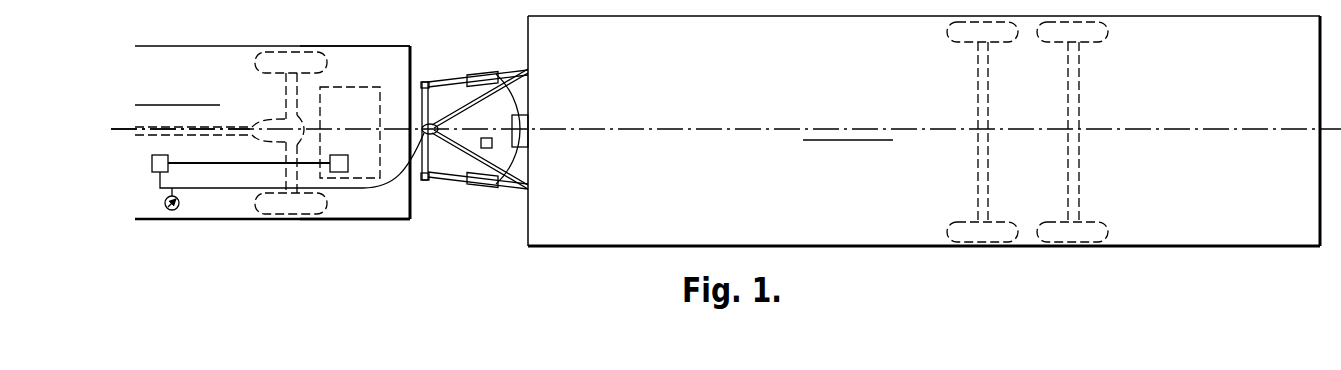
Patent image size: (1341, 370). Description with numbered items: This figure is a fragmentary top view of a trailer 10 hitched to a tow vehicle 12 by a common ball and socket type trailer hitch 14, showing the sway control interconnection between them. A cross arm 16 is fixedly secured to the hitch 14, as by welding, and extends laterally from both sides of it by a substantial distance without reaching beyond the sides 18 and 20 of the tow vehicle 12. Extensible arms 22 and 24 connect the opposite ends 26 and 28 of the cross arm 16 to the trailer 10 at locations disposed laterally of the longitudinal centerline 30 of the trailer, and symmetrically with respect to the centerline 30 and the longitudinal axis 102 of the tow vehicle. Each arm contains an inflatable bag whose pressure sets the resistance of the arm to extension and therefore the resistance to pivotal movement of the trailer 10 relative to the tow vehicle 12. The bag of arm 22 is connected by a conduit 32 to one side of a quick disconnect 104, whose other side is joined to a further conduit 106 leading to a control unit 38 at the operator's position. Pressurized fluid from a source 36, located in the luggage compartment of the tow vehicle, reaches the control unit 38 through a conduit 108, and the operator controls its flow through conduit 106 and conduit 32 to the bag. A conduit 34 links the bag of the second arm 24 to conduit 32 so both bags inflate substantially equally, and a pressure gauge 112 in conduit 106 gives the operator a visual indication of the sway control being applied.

The trailer 10 is at (845, 250).
The tow vehicle 12 is at (306, 226).
The trailer hitch 14 is at (431, 123).
The cross arm 16 is at (421, 106).
The side of the tow vehicle 18 is at (372, 221).
The side of the tow vehicle 20 is at (371, 46).
The extensible arm 22 is at (473, 187).
The extensible arm 24 is at (473, 75).
The end of the cross arm 26 is at (425, 180).
The end of the cross arm 28 is at (425, 82).
The longitudinal centerline of the trailer 30 is at (695, 130).
The conduit 32 is at (514, 155).
The conduit 34 is at (514, 104).
The source of pressurized fluid 36 is at (337, 155).
The control unit 38 is at (153, 172).
The longitudinal axis of the tow vehicle 102 is at (111, 130).
The quick disconnect 104 is at (500, 126).
The conduit 106 is at (364, 185).
The conduit 108 is at (203, 163).
The pressure gauge 112 is at (180, 203).